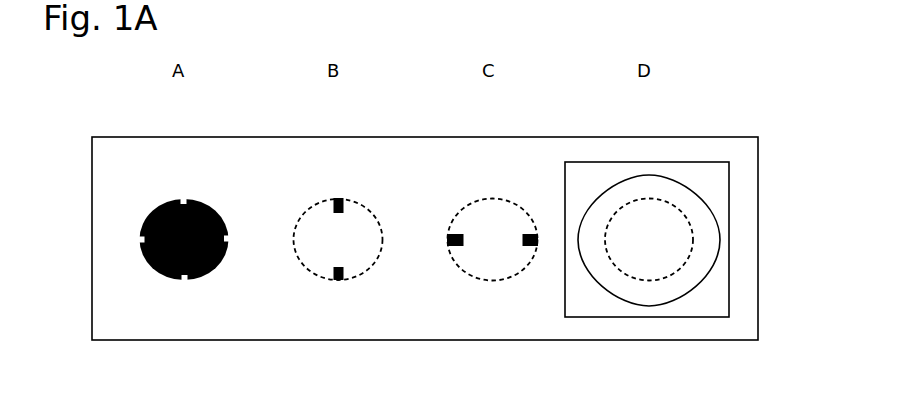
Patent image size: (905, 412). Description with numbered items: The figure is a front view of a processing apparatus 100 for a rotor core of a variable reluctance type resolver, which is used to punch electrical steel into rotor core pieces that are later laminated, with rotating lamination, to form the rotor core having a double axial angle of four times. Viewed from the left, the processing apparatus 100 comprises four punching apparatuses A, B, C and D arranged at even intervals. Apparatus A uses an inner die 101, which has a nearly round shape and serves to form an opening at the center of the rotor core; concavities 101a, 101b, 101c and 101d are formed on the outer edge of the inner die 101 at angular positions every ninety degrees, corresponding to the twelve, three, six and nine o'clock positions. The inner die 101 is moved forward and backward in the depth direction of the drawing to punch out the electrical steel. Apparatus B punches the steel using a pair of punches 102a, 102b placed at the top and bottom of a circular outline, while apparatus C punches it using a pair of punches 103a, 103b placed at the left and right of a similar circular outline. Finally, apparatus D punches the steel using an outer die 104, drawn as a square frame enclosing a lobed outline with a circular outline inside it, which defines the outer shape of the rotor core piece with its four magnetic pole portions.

The processing apparatus 100 is at (729, 129).
The inner die 101 is at (206, 199).
The concavity 101a is at (183, 198).
The concavity 101b is at (228, 239).
The concavity 101c is at (183, 280).
The concavity 101d is at (141, 238).
The punch 102a is at (338, 198).
The punch 102b is at (338, 280).
The punch 103a is at (453, 235).
The punch 103b is at (531, 246).
The outer die 104 is at (588, 174).